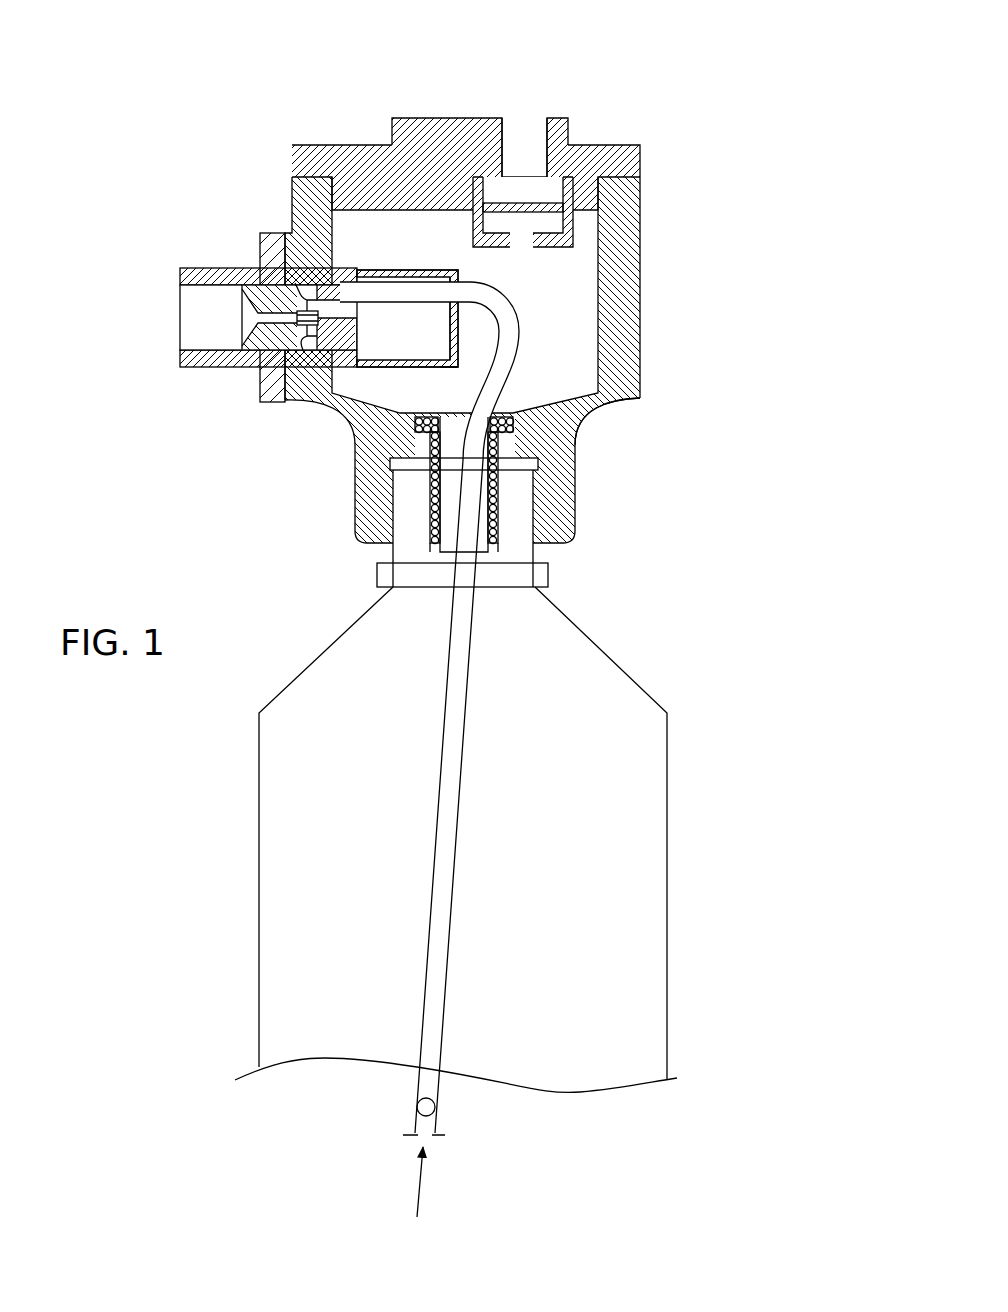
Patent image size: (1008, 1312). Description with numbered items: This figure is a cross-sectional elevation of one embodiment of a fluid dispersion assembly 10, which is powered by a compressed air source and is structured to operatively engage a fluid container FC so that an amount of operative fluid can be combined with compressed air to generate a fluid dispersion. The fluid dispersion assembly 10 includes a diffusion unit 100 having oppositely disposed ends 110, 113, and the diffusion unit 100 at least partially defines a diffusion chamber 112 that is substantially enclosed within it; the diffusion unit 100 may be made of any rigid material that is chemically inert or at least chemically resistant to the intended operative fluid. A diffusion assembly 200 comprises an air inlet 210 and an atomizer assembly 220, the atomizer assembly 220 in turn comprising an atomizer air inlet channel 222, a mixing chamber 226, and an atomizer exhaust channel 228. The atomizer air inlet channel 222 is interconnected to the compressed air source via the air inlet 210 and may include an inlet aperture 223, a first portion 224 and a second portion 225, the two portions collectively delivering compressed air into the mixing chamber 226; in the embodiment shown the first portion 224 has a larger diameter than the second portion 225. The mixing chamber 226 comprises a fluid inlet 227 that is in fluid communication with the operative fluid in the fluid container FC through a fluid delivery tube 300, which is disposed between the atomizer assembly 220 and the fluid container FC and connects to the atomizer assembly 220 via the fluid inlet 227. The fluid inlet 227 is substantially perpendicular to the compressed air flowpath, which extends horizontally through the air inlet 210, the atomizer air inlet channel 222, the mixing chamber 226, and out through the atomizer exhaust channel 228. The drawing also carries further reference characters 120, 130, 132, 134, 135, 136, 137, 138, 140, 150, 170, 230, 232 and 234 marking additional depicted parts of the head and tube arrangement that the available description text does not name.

The fluid dispersion assembly 10 is at (172, 108).
The diffusion unit 100 is at (415, 615).
The end of diffusion unit 110 is at (340, 448).
The diffusion chamber 112 is at (538, 397).
The end of diffusion unit 113 is at (324, 108).
The tube retainer 120 is at (432, 503).
The cap 130 is at (408, 118).
The inlet opening 132 is at (537, 105).
The inlet passage 134 is at (463, 228).
The valve cup 135 is at (613, 220).
The valve housing 136 is at (573, 208).
The inlet bore 137 is at (528, 170).
The valve disc 138 is at (573, 233).
The collar 140 is at (567, 553).
The chamber 150 is at (340, 262).
The gasket plate 170 is at (540, 465).
The diffusion assembly 200 is at (229, 305).
The air inlet 210 is at (152, 322).
The atomizer assembly 220 is at (262, 263).
The atomizer air inlet channel 222 is at (225, 308).
The inlet aperture 223 is at (199, 359).
The first portion 224 is at (262, 330).
The second portion 225 is at (306, 322).
The mixing chamber 226 is at (296, 338).
The fluid inlet 227 is at (295, 300).
The atomizer exhaust channel 228 is at (337, 313).
The piston 230 is at (460, 337).
The cylinder housing 232 is at (476, 330).
The tube outlet 234 is at (447, 373).
The fluid delivery tube 300 is at (462, 790).
The fluid container FC is at (668, 895).